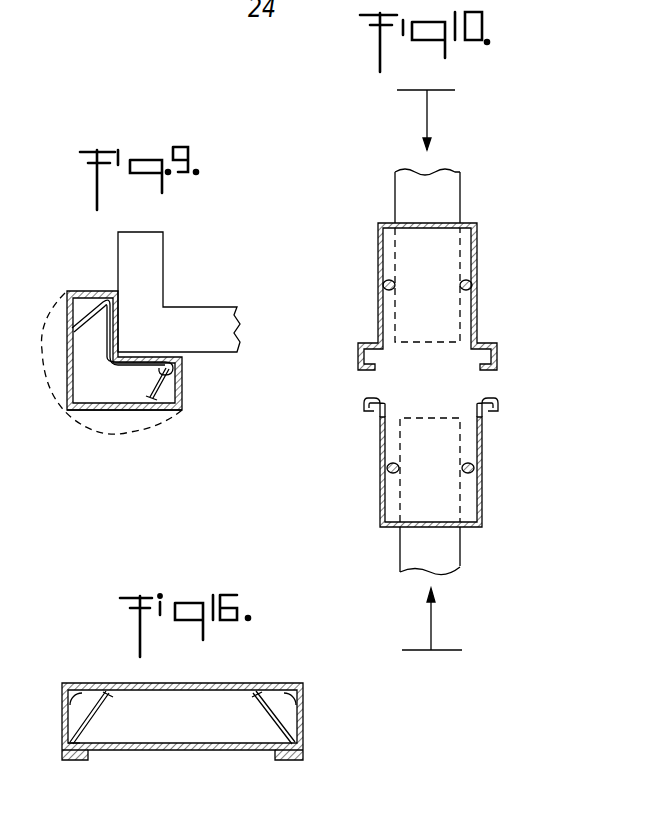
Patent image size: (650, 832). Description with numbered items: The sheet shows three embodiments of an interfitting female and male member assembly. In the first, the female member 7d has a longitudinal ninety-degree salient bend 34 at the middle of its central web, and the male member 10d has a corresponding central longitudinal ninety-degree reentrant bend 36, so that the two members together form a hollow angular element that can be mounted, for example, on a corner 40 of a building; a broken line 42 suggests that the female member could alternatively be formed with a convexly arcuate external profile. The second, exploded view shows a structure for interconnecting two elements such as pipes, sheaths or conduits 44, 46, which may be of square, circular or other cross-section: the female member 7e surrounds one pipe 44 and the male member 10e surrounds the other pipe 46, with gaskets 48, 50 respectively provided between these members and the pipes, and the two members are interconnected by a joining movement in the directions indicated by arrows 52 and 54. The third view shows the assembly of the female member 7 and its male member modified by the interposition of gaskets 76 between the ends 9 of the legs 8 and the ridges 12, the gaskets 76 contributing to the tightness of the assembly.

In FIG. 9, the corner 40 is at (143, 335).
In FIG. 9, the female member 7d is at (67, 303).
In FIG. 9, the reentrant bend 36 is at (112, 363).
In FIG. 9, the male member 10d is at (173, 365).
In FIG. 9, the salient bend 34 is at (67, 406).
In FIG. 9, the broken line 42 is at (100, 428).
In FIG. 10, the arrow 52 is at (430, 118).
In FIG. 10, the pipe 44 is at (408, 176).
In FIG. 10, the female member 7e is at (378, 240).
In FIG. 10, the gasket 48 is at (397, 283).
In FIG. 10, the male member 10e is at (390, 427).
In FIG. 10, the gasket 50 is at (397, 466).
In FIG. 10, the pipe 46 is at (425, 548).
In FIG. 10, the arrow 54 is at (432, 618).
In FIG. 16, the female member 7 is at (183, 690).
In FIG. 16, the gasket 76 is at (289, 762).
In FIG. 16, the end 9 is at (277, 756).
In FIG. 16, the leg 8 is at (287, 692).
In FIG. 16, the ridge 12 is at (78, 744).